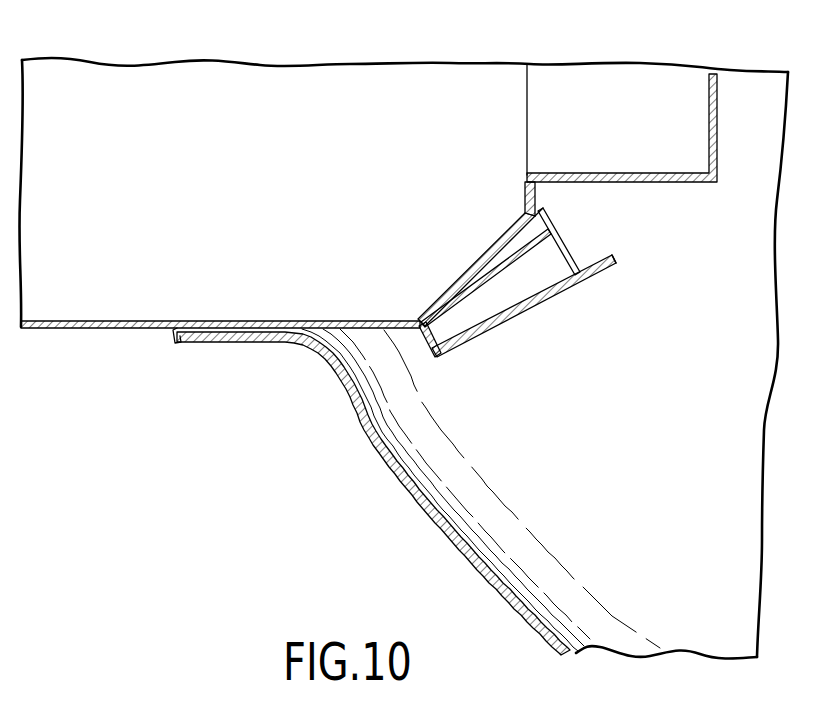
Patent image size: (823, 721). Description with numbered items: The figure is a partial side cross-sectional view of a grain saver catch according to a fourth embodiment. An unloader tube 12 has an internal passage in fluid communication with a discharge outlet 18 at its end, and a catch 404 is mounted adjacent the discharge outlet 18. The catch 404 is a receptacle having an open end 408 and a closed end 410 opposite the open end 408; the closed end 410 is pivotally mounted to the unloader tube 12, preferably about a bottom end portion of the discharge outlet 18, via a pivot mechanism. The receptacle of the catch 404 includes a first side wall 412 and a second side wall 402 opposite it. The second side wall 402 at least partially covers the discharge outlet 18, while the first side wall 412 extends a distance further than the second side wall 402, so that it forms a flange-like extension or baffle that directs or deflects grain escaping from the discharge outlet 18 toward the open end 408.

The unloader tube 12 is at (95, 328).
The discharge outlet 18 is at (530, 197).
The second side wall 402 is at (497, 268).
The catch 404 is at (562, 296).
The open end 408 is at (588, 240).
The closed end 410 is at (414, 350).
The first side wall 412 is at (500, 328).